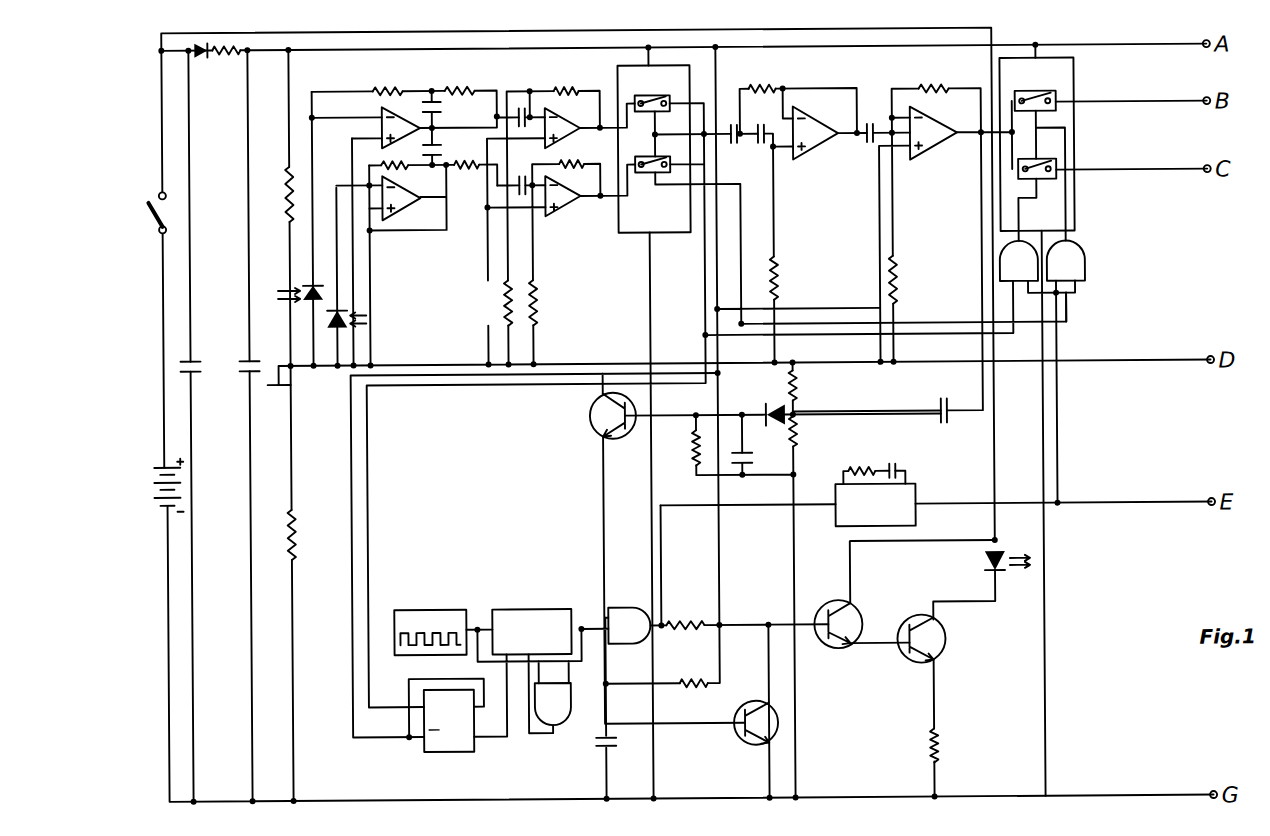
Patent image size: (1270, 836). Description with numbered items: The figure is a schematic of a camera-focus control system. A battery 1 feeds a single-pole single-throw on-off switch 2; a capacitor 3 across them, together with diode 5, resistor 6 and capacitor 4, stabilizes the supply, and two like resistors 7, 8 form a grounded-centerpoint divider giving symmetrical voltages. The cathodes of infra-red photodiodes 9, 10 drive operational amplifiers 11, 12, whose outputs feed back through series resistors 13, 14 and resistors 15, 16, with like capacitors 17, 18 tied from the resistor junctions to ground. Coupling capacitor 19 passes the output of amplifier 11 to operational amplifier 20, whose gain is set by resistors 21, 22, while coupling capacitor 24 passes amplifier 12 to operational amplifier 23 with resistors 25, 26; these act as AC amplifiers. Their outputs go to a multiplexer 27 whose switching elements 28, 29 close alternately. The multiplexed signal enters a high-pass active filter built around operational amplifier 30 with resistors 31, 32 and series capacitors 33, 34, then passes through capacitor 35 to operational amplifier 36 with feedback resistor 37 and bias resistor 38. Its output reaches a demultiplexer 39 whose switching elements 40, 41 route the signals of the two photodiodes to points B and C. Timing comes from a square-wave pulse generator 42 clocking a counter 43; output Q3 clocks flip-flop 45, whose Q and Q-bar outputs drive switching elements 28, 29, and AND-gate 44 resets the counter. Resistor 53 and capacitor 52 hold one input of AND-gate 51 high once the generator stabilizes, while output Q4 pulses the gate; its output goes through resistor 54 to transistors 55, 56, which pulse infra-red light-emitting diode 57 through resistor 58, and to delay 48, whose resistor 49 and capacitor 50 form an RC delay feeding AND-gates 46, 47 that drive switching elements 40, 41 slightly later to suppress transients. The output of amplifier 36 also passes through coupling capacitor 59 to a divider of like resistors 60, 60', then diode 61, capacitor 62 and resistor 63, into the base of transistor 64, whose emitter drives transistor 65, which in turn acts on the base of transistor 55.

The battery 1 is at (158, 500).
The single-pole single-throw switch 2 is at (158, 193).
The capacitor 3 is at (200, 374).
The capacitor 4 is at (244, 362).
The diode 5 is at (201, 60).
The resistor 6 is at (226, 60).
The resistor 7 is at (285, 192).
The resistor 8 is at (292, 536).
The infra-red photodiode 9 is at (310, 282).
The infra-red photodiode 10 is at (362, 330).
The operational amplifier 11 is at (378, 126).
The operational amplifier 12 is at (410, 205).
The resistor 13 is at (374, 92).
The resistor 14 is at (456, 90).
The resistor 15 is at (380, 166).
The resistor 16 is at (460, 170).
The capacitor 17 is at (428, 104).
The capacitor 18 is at (441, 153).
The coupling capacitor 19 is at (520, 110).
The operational amplifier 20 is at (563, 124).
The resistor 21 is at (565, 92).
The resistor 22 is at (503, 300).
The operational amplifier 23 is at (565, 208).
The coupling capacitor 24 is at (522, 200).
The resistor 25 is at (578, 166).
The resistor 26 is at (535, 305).
The multiplexer 27 is at (642, 238).
The switching element 28 is at (672, 100).
The switching element 29 is at (655, 180).
The operational amplifier 30 is at (826, 152).
The resistor 31 is at (768, 92).
The resistor 32 is at (778, 284).
The capacitor 33 is at (734, 150).
The capacitor 34 is at (762, 150).
The capacitor 35 is at (870, 150).
The operational amplifier 36 is at (934, 146).
The resistor 37 is at (928, 92).
The resistor 38 is at (897, 290).
The demultiplexer 39 is at (1052, 62).
The switching element 40 is at (1030, 100).
The switching element 41 is at (1034, 166).
The square-wave pulse generator 42 is at (425, 613).
The counter 43 is at (512, 613).
The AND-gate 44 is at (552, 728).
The flip-flop 45 is at (472, 742).
The AND-gate 46 is at (1086, 268).
The AND-gate 47 is at (996, 262).
The delay 48 is at (912, 512).
The resistor 49 is at (858, 472).
The capacitor 50 is at (892, 468).
The AND-gate 51 is at (626, 610).
The capacitor 52 is at (612, 746).
The resistor 53 is at (690, 690).
The resistor 54 is at (686, 624).
The transistor 55 is at (838, 654).
The transistor 56 is at (942, 646).
The infra-red light-emitting diode 57 is at (978, 572).
The resistor 58 is at (936, 750).
The coupling capacitor 59 is at (944, 430).
The resistor 60 is at (821, 430).
The resistor 60' is at (826, 384).
The diode 61 is at (772, 408).
The capacitor 62 is at (764, 448).
The resistor 63 is at (695, 448).
The transistor 64 is at (587, 420).
The transistor 65 is at (748, 706).